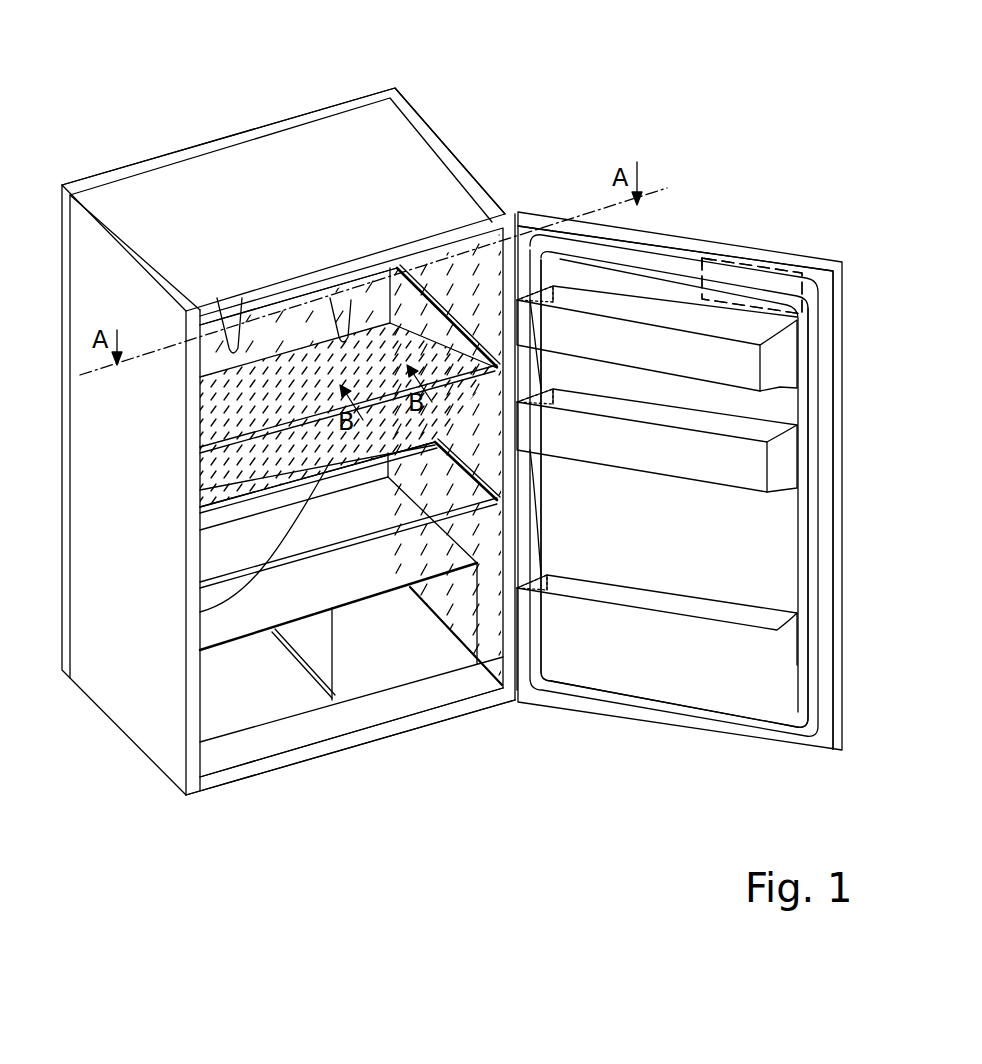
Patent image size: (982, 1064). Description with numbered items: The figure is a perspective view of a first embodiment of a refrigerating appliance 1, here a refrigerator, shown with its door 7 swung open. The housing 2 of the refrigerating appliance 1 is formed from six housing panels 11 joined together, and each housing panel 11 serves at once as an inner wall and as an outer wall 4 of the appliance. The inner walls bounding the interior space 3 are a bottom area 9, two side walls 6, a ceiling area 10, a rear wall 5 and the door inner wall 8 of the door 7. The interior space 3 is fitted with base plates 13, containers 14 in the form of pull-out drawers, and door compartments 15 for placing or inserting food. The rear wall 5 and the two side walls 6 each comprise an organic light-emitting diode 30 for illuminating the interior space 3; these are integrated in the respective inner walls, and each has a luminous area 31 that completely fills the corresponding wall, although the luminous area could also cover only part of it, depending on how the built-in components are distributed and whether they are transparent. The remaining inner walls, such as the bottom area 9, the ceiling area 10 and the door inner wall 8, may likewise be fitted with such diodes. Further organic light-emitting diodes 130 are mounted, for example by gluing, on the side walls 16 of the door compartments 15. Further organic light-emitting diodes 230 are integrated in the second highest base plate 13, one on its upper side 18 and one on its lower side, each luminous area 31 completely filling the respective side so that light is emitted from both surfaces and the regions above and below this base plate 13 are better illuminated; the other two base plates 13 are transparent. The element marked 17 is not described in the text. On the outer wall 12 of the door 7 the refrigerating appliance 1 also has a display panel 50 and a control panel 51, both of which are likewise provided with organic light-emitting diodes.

The refrigerating appliance 1 is at (497, 83).
The housing 2 is at (327, 170).
The interior space 3 is at (200, 375).
The outer wall 4 is at (236, 228).
The rear wall 5 is at (338, 327).
The side wall 6 is at (205, 700).
The door 7 is at (664, 232).
The door inner wall 8 is at (657, 398).
The bottom area 9 is at (355, 725).
The ceiling area 10 is at (224, 330).
The housing panel 11 is at (285, 122).
The outer wall of the door 12 is at (769, 250).
The base plate 13 is at (472, 368).
The container 14 is at (283, 693).
The door compartment 15 is at (717, 667).
The side wall of the door compartment 16 is at (545, 290).
The shelf edge 17 is at (200, 490).
The upper side of the base plate 18 is at (200, 612).
The organic light-emitting diode 30 is at (441, 62).
The luminous area 31 is at (330, 340).
The display panel 50 is at (718, 257).
The control panel 51 is at (752, 286).
The organic light-emitting diode 130 is at (577, 292).
The organic light-emitting diode 230 is at (200, 512).